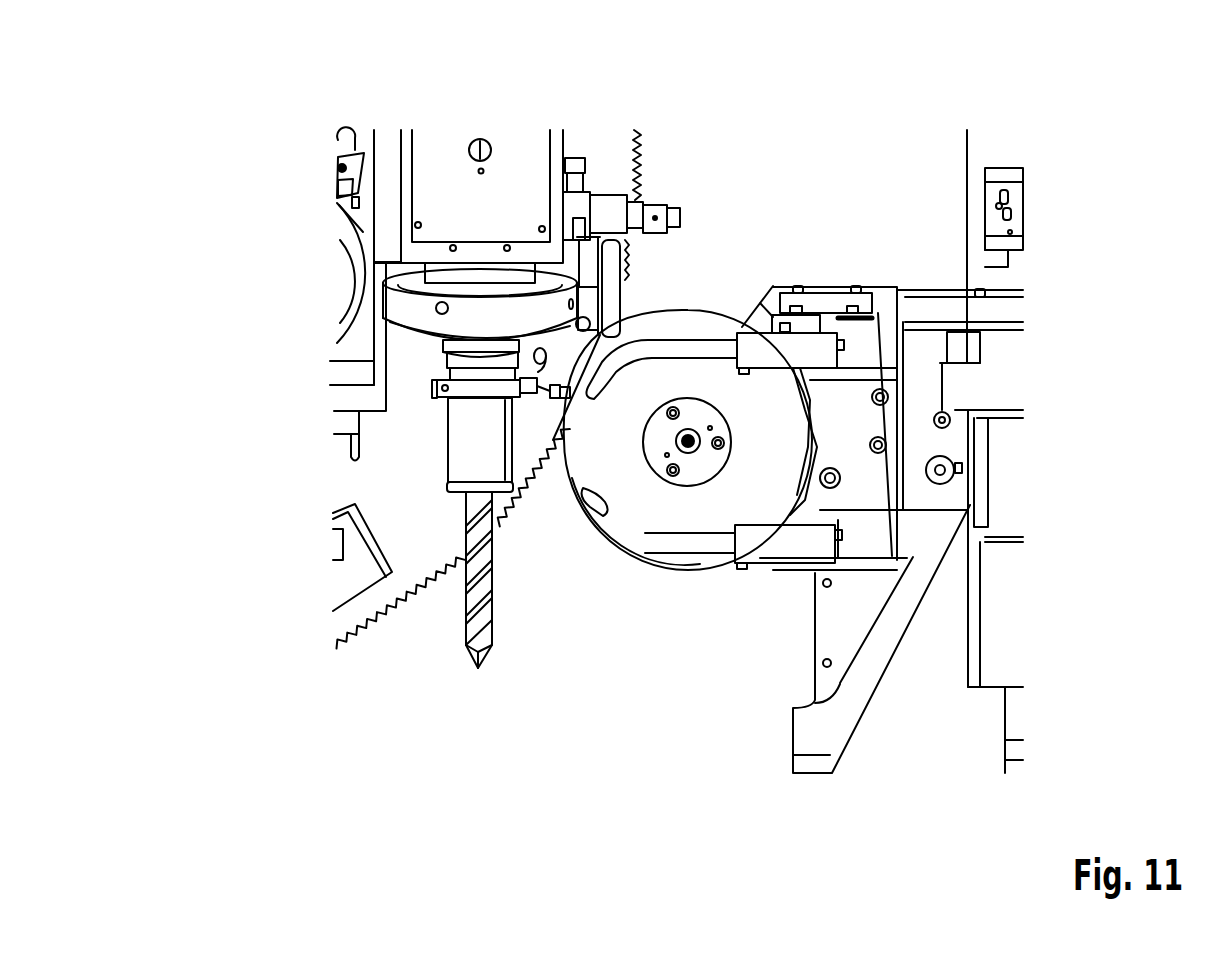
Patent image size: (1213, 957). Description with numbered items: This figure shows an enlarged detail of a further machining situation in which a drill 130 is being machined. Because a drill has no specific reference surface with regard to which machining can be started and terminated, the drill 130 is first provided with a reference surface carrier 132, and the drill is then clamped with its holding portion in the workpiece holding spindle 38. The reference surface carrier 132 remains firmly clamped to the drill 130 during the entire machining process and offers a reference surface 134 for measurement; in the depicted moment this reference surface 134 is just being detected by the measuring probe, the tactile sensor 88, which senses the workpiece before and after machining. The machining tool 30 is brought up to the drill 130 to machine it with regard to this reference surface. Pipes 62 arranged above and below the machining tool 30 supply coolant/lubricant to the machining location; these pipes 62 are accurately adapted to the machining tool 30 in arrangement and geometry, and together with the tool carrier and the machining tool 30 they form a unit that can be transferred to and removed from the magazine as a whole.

The workpiece holding spindle 38 is at (520, 143).
The tactile sensor 88 is at (603, 337).
The reference surface carrier 132 is at (477, 390).
The reference surface 134 is at (537, 392).
The drill 130 is at (467, 610).
The machining tool 30 is at (670, 513).
The pipes 62 is at (703, 537).